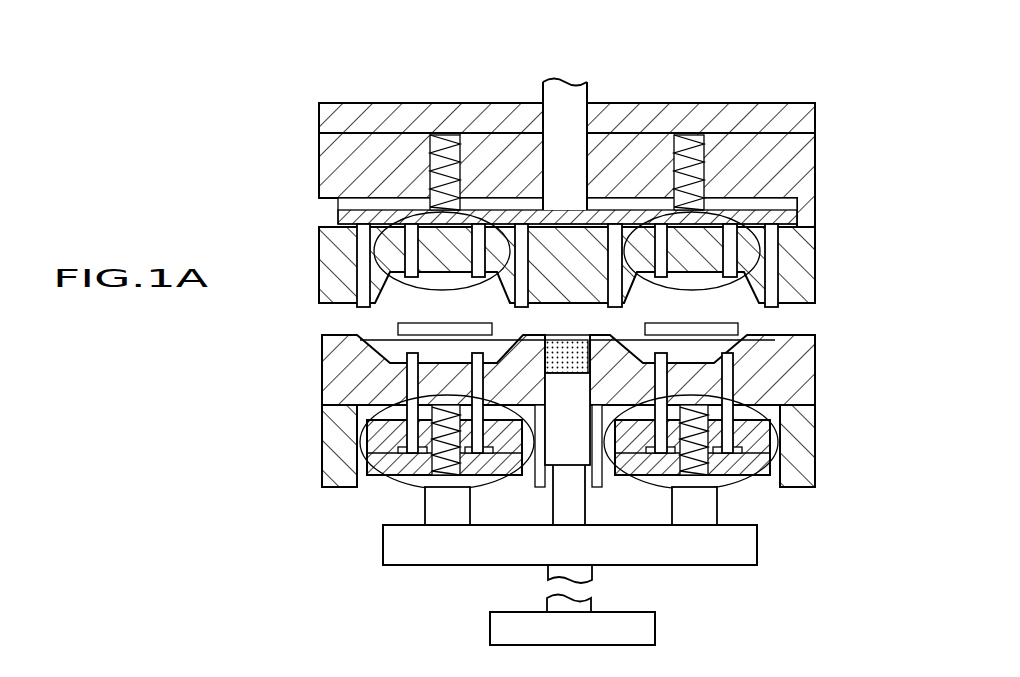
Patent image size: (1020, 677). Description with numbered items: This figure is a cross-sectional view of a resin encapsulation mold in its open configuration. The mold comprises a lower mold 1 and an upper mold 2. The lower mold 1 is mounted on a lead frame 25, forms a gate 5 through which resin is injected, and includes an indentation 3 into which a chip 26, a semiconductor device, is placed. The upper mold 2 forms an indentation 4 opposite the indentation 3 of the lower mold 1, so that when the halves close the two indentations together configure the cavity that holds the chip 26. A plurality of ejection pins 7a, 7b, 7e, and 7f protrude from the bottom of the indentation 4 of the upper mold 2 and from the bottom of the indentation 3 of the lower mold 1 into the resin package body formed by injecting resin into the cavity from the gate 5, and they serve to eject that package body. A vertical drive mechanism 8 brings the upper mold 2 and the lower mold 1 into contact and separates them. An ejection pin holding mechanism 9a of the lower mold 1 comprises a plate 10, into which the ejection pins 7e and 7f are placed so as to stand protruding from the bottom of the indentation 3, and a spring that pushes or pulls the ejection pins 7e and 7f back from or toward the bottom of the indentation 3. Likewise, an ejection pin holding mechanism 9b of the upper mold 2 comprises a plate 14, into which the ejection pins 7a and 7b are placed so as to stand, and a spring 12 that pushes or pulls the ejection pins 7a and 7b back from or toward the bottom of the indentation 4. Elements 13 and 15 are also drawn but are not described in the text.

The lower mold 1 is at (573, 387).
The upper mold 2 is at (574, 158).
The indentation 3 is at (360, 350).
The indentation 4 is at (360, 285).
The gate 5 is at (537, 340).
The ejection pin 7a is at (412, 233).
The ejection pin 7b is at (477, 233).
The ejection pin 7e is at (410, 373).
The ejection pin 7f is at (480, 360).
The vertical drive mechanism 8 is at (655, 627).
The ejection pin holding mechanism 9a is at (752, 489).
The ejection pin holding mechanism 9b is at (384, 211).
The plate 10 is at (568, 339).
The spring 12 is at (447, 135).
The shaft 13 is at (565, 107).
The plate 14 is at (800, 217).
The upper holder block 15 is at (333, 250).
The lead frame 25 is at (398, 328).
The chip 26 is at (437, 328).